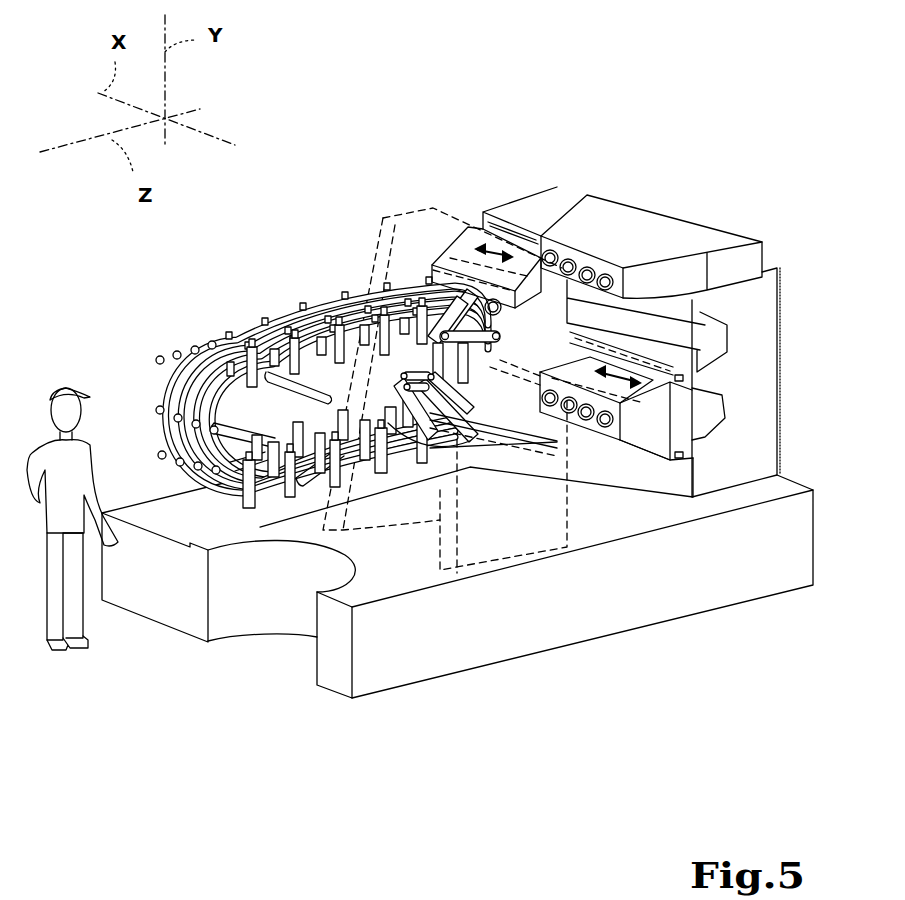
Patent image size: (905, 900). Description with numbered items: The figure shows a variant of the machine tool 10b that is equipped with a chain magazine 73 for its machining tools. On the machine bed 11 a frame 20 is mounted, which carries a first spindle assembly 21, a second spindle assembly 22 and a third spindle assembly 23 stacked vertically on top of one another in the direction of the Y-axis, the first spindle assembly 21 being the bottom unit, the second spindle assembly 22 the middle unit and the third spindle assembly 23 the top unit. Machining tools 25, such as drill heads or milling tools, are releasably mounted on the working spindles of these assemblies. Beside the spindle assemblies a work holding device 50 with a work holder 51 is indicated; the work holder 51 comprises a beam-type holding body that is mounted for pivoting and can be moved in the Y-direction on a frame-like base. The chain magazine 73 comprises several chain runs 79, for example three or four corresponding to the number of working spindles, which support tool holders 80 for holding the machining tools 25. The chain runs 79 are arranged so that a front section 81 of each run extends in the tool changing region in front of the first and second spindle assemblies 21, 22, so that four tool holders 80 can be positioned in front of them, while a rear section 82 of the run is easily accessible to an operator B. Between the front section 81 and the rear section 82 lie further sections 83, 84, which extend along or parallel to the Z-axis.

The machine tool 10b is at (639, 273).
The machine bed 11 is at (342, 678).
The frame 20 is at (785, 297).
The first spindle assembly 21 is at (653, 442).
The second spindle assembly 22 is at (482, 238).
The third spindle assembly 23 is at (703, 230).
The machining tools 25 is at (243, 302).
The work holding device 50 is at (383, 215).
The work holder 51 is at (560, 450).
The chain magazine 73 is at (212, 284).
The chain runs 79 is at (228, 330).
The tool holders 80 is at (300, 365).
The front section 81 is at (492, 377).
The rear section 82 is at (190, 372).
The section 83 is at (353, 313).
The section 84 is at (282, 488).
The operator B is at (62, 645).